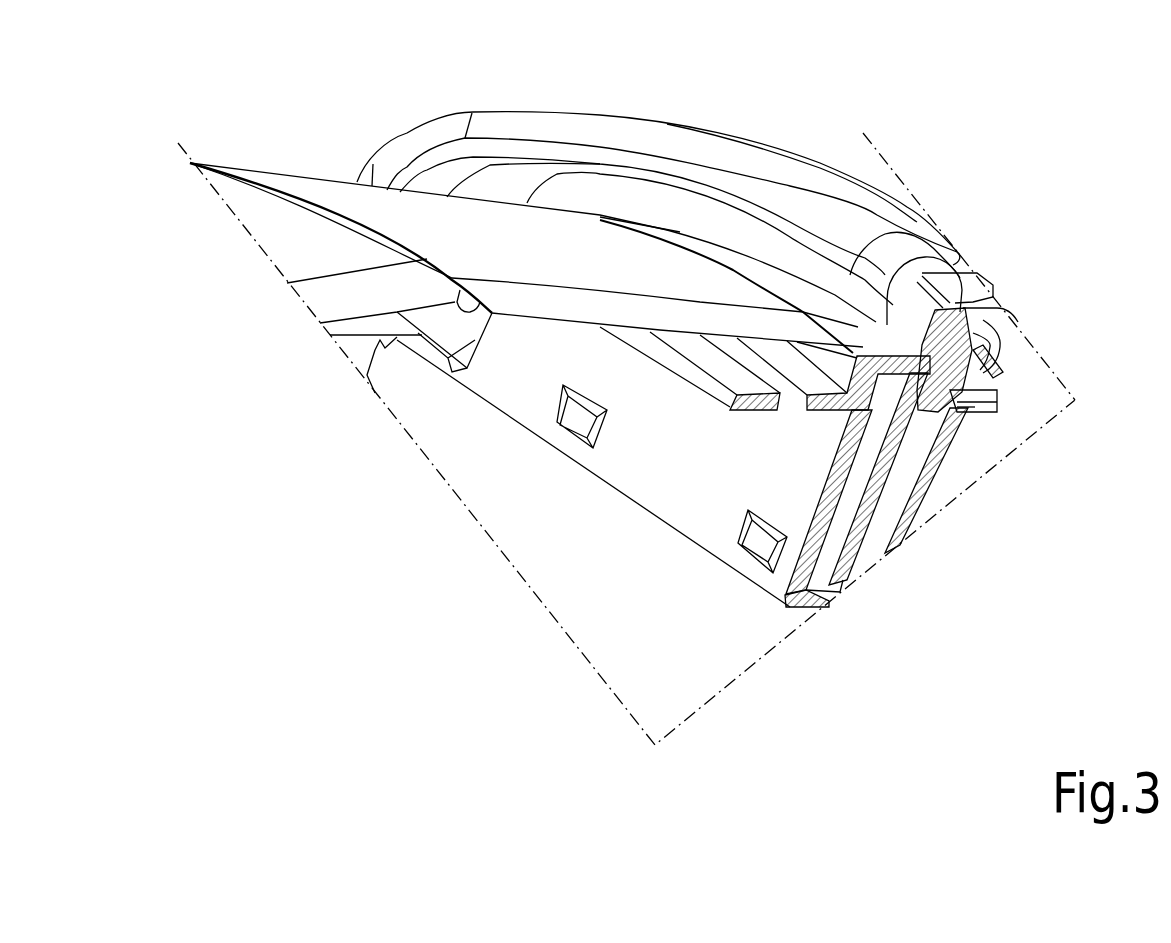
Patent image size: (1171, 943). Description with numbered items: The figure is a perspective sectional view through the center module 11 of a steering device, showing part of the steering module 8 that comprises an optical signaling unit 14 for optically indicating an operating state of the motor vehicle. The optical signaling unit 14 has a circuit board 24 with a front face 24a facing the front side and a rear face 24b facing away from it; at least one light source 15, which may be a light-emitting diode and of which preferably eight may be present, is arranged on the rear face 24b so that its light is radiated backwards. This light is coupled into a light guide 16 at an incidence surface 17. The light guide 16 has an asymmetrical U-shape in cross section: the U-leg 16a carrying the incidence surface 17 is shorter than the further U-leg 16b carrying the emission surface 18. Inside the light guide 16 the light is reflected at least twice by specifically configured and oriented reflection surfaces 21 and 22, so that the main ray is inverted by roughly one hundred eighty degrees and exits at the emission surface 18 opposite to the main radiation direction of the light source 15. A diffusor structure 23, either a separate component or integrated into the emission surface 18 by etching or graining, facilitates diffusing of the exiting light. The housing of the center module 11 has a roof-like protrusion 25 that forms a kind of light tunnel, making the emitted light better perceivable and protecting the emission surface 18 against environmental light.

The steering module 8 is at (1002, 284).
The center module 11 is at (838, 150).
The optical signaling unit 14 is at (978, 403).
The light source 15 is at (888, 397).
The light guide 16 is at (977, 327).
The U-leg 16a is at (1012, 372).
The further U-leg 16b is at (960, 285).
The incidence surface 17 is at (970, 406).
The emission surface 18 is at (927, 243).
The reflection surface 21 is at (978, 392).
The reflection surface 22 is at (1000, 346).
The diffusor structure 23 is at (724, 226).
The circuit board 24 is at (826, 573).
The front face 24a is at (847, 510).
The rear face 24b is at (893, 473).
The roof-like protrusion 25 is at (667, 148).